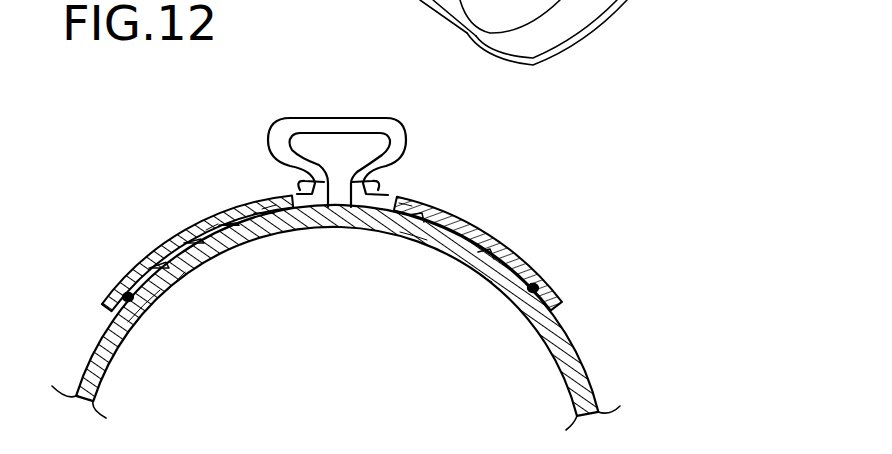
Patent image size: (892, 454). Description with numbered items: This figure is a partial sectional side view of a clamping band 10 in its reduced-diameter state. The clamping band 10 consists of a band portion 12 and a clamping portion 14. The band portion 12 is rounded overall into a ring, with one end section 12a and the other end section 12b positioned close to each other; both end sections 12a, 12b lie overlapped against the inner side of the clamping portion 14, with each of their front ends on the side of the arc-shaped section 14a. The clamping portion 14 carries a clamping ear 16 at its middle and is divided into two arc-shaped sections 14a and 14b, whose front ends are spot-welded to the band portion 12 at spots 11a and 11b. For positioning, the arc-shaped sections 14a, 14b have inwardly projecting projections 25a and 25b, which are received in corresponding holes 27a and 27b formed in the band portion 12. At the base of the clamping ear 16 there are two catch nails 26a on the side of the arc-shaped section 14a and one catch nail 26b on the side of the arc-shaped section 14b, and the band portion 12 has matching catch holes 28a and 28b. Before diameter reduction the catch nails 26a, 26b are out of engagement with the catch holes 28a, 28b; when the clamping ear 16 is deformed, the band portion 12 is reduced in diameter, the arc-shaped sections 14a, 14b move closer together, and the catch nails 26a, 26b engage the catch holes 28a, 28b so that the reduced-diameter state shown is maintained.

The clamping band 10 is at (488, 173).
The band portion 12 is at (577, 360).
The one end section 12a is at (128, 322).
The other end section 12b is at (427, 240).
The clamping portion 14 is at (402, 188).
The arc-shaped section 14a is at (175, 243).
The arc-shaped section 14b is at (482, 223).
The clamping ear 16 is at (324, 127).
The spot 11a is at (115, 292).
The spot 11b is at (536, 285).
The projection 25a is at (173, 285).
The projection 25b is at (480, 275).
The catch nail 26a is at (276, 205).
The catch nail 26b is at (399, 203).
The hole 27a is at (158, 277).
The hole 27b is at (482, 273).
The catch hole 28a is at (232, 252).
The catch hole 28b is at (377, 234).